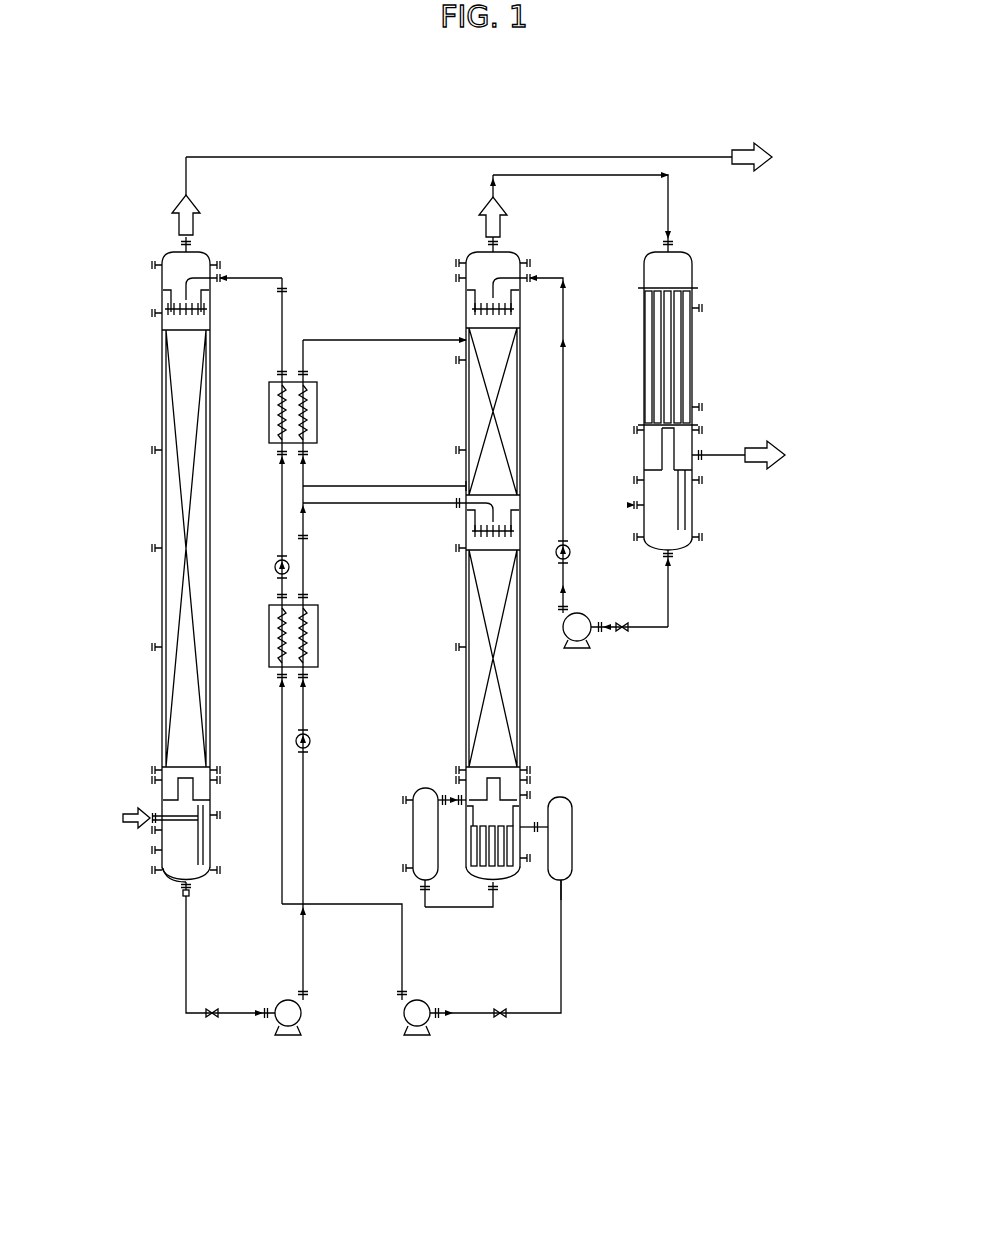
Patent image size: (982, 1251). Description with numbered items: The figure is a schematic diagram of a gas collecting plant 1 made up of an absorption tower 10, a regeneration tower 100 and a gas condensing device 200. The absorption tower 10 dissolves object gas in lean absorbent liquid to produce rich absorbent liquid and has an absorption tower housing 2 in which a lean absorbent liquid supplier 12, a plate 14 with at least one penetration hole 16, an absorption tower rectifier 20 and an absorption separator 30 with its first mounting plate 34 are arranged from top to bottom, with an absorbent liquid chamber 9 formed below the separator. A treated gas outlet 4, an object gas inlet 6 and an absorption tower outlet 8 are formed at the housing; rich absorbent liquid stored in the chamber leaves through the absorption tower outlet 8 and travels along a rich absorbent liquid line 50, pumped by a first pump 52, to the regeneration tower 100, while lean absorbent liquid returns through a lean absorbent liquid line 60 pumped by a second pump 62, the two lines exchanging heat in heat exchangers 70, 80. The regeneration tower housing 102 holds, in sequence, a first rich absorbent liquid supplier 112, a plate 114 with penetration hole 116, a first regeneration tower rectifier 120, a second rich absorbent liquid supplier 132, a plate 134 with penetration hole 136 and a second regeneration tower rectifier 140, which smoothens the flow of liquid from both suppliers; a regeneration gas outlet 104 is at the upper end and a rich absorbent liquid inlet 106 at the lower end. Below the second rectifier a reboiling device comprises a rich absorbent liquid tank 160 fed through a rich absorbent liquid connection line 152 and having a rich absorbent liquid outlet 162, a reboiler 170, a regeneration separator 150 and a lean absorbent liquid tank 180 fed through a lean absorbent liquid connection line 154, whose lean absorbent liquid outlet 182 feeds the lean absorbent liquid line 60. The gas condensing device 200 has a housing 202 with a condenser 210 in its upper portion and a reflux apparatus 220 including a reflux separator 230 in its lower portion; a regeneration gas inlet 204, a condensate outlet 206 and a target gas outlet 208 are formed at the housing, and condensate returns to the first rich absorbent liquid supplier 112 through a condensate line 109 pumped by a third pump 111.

The gas collecting plant 1 is at (452, 146).
The absorption tower housing 2 is at (213, 539).
The treated gas outlet 4 is at (190, 243).
The object gas inlet 6 is at (150, 826).
The absorption tower outlet 8 is at (196, 893).
The absorbent liquid chamber 9 is at (162, 880).
The absorption tower 10 is at (168, 543).
The lean absorbent liquid supplier 12 is at (190, 292).
The plate 14 is at (176, 316).
The penetration hole 16 is at (206, 313).
The absorption tower rectifier 20 is at (162, 592).
The absorption separator 30 is at (152, 800).
The first mounting plate 34 is at (178, 800).
The rich absorbent liquid line 50 is at (232, 1015).
The first pump 52 is at (290, 1035).
The lean absorbent liquid line 60 is at (348, 907).
The second pump 62 is at (418, 1035).
The heat exchanger 70 is at (318, 635).
The heat exchanger 80 is at (318, 412).
The regeneration tower 100 is at (509, 539).
The regeneration tower housing 102 is at (466, 330).
The regeneration gas outlet 104 is at (500, 243).
The rich absorbent liquid inlet 106 is at (497, 888).
The condensate line 109 is at (648, 630).
The third pump 111 is at (578, 648).
The first rich absorbent liquid supplier 112 is at (503, 280).
The plate 114 is at (466, 300).
The penetration hole 116 is at (515, 300).
The first regeneration tower rectifier 120 is at (478, 392).
The second rich absorbent liquid supplier 132 is at (495, 518).
The plate 134 is at (470, 532).
The penetration hole 136 is at (508, 532).
The second regeneration tower rectifier 140 is at (478, 620).
The regeneration separator 150 is at (505, 800).
The rich absorbent liquid connection line 152 is at (443, 800).
The lean absorbent liquid connection line 154 is at (538, 827).
The rich absorbent liquid tank 160 is at (410, 836).
The rich absorbent liquid outlet 162 is at (428, 888).
The reboiler 170 is at (528, 846).
The lean absorbent liquid tank 180 is at (573, 824).
The lean absorbent liquid outlet 182 is at (566, 886).
The gas condensing device 200 is at (703, 258).
The housing 202 is at (694, 274).
The regeneration gas inlet 204 is at (678, 243).
The condensate outlet 206 is at (676, 554).
The target gas outlet 208 is at (700, 455).
The condenser 210 is at (694, 352).
The reflux apparatus 220 is at (626, 430).
The reflux separator 230 is at (680, 450).